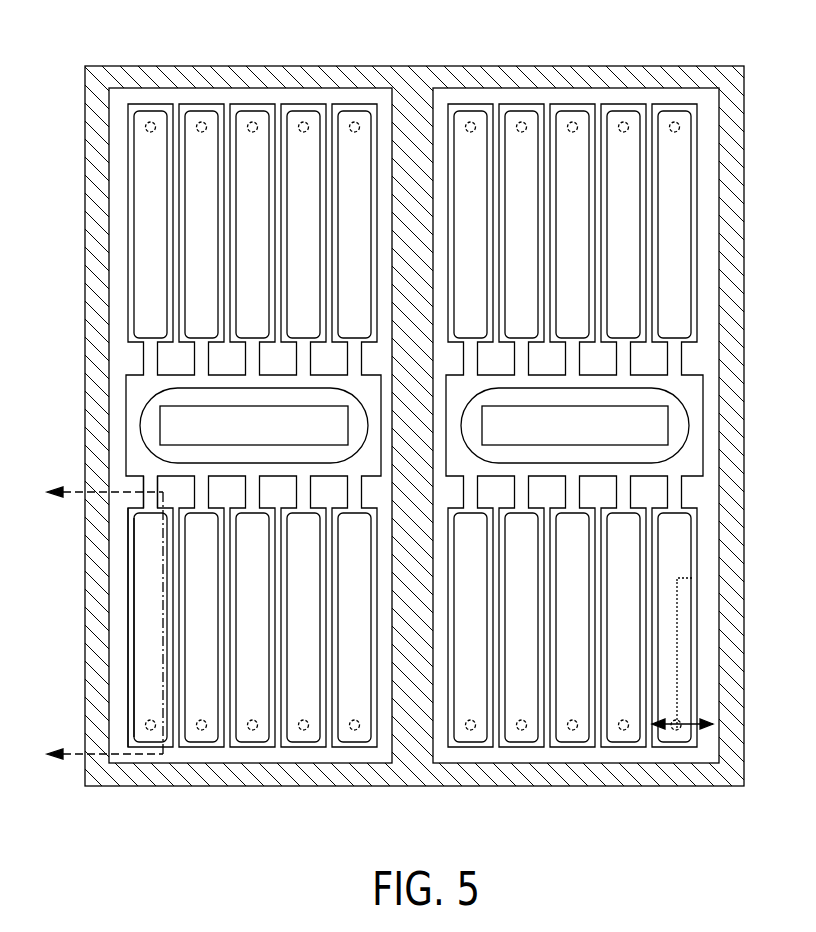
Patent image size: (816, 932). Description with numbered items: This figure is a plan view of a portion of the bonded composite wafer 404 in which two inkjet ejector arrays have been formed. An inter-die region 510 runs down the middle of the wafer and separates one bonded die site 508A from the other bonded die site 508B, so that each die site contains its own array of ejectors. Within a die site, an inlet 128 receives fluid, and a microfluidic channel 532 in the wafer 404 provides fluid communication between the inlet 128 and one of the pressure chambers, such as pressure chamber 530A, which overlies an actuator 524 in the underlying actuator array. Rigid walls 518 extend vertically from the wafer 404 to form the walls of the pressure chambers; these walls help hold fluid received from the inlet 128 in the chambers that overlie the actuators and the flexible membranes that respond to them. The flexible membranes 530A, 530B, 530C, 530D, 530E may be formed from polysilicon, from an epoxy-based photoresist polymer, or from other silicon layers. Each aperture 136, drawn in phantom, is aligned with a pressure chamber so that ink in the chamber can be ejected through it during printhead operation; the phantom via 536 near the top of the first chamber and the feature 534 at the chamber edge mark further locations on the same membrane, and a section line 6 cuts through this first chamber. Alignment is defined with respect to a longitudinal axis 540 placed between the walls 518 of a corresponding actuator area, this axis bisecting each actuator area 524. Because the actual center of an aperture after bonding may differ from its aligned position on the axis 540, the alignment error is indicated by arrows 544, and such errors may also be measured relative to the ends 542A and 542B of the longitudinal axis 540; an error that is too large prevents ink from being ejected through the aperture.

The bonded composite wafer 404 is at (127, 786).
The bonded die site 508A is at (250, 88).
The bonded die site 508B is at (573, 88).
The inter-die region 510 is at (411, 92).
The rigid walls 518 is at (120, 572).
The actuator 524 is at (133, 637).
The pressure chamber 530A is at (153, 683).
The flexible membrane 530B is at (210, 703).
The flexible membrane 530C is at (262, 703).
The flexible membrane 530D is at (312, 703).
The flexible membrane 530E is at (362, 703).
The microfluidic channel 532 is at (148, 500).
The finger inner edge 534 is at (138, 611).
The via 536 is at (144, 127).
The inlet 128 is at (178, 427).
The aperture 136 is at (146, 725).
The longitudinal axis 540 is at (682, 650).
The end of the longitudinal axis 542A is at (685, 723).
The end of the longitudinal axis 542B is at (687, 578).
The arrows 544 is at (692, 733).
The section line 6- 6 is at (95, 624).